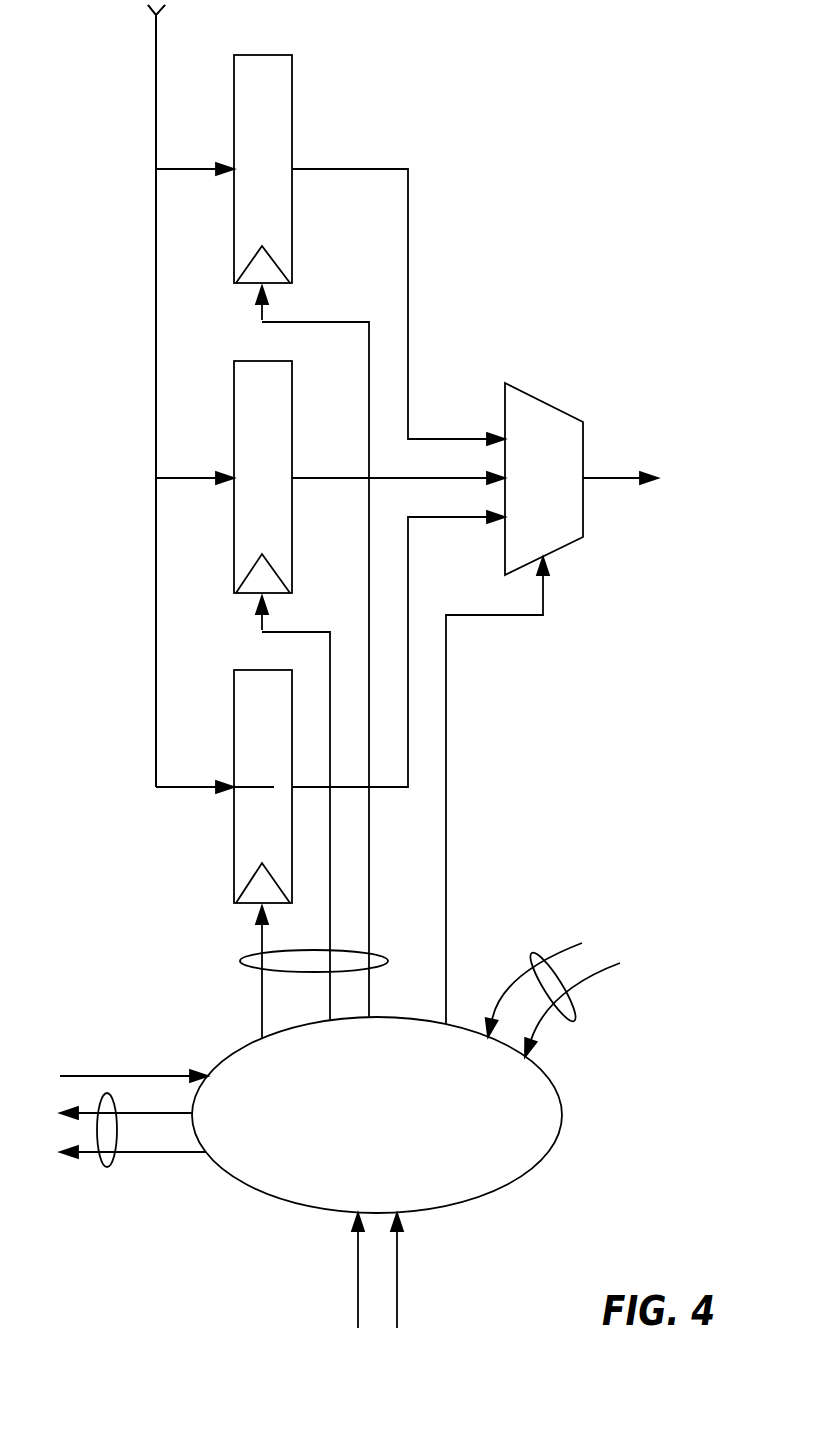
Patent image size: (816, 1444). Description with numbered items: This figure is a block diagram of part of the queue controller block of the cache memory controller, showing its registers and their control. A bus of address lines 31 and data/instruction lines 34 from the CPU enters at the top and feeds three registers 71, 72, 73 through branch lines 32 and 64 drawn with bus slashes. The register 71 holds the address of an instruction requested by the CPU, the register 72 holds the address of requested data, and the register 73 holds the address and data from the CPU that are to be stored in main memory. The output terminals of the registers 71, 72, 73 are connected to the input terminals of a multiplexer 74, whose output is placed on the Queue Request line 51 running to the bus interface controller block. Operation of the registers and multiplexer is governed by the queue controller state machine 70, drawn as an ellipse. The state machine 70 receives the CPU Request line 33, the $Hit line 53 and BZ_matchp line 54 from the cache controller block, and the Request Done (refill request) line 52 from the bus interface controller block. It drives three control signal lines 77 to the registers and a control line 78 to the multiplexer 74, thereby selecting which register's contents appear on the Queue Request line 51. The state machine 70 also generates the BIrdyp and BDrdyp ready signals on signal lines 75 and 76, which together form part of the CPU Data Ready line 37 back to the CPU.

The address lines 31 is at (156, 33).
The data/instruction lines 34 is at (111, 396).
The input line 64 is at (165, 72).
The data bus 32 is at (182, 177).
The register 71 is at (276, 182).
The register 72 is at (276, 491).
The register 73 is at (276, 800).
The multiplexer 74 is at (557, 491).
The Queue Request line 51 is at (612, 478).
The control line 78 is at (447, 826).
The control signal lines 77 is at (245, 962).
The queue controller state machine 70 is at (391, 1129).
The Request Done line 52 is at (567, 1020).
The CPU Request line 33 is at (115, 1075).
The CPU Data Ready line 37 is at (107, 1170).
The signal line 75 is at (165, 1114).
The signal line 76 is at (137, 1153).
The $Hit line 53 is at (355, 1272).
The BZ_matchp line 54 is at (398, 1272).